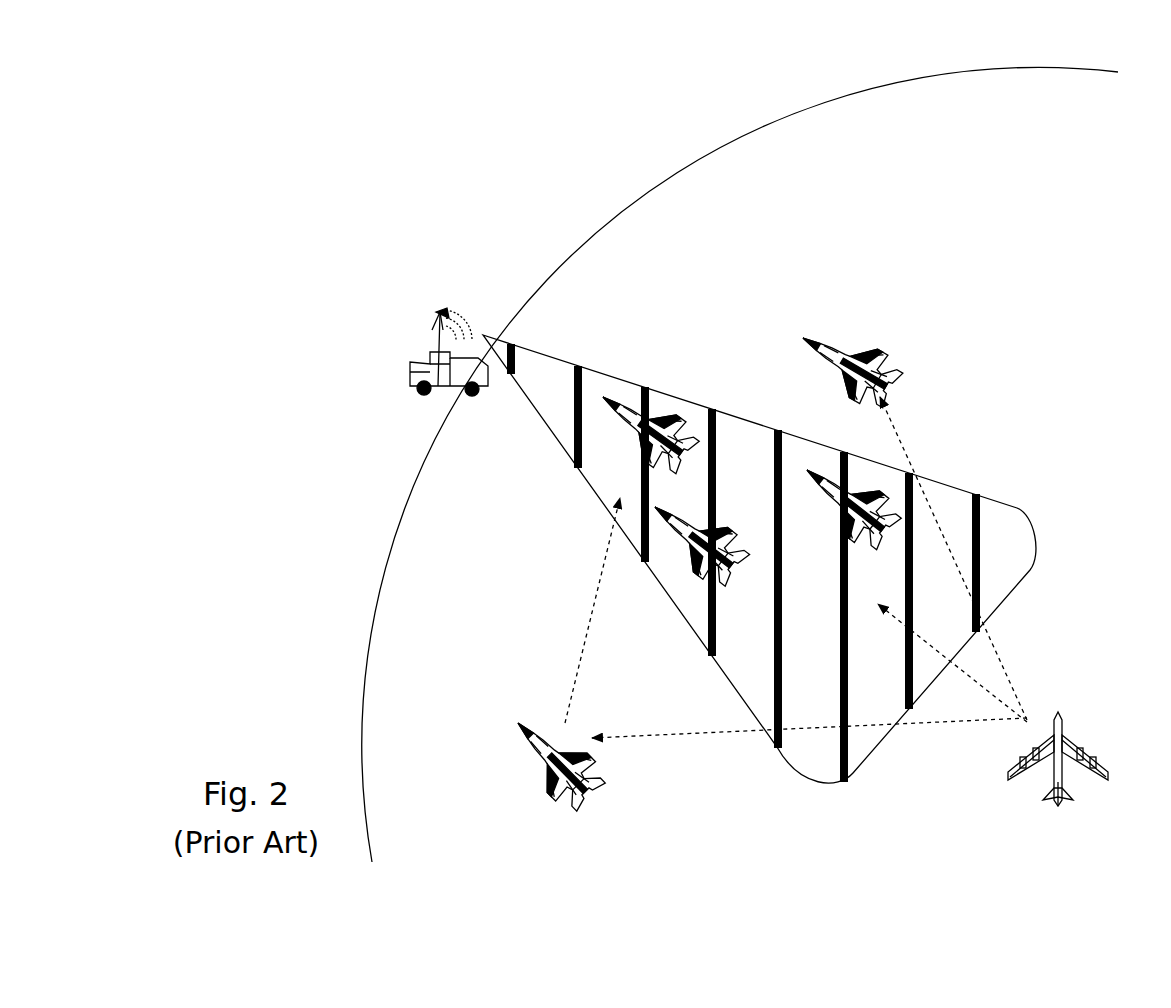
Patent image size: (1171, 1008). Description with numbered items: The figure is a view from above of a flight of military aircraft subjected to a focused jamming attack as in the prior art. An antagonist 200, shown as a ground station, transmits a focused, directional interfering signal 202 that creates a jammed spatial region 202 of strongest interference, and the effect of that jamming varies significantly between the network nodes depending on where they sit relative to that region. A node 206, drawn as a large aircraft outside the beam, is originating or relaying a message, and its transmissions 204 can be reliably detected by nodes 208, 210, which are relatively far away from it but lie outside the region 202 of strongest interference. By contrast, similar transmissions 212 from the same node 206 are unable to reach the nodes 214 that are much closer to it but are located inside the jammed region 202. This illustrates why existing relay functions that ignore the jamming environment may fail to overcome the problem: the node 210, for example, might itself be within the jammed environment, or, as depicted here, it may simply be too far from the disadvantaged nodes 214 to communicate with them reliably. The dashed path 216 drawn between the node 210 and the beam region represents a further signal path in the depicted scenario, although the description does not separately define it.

The antagonist 200 is at (413, 362).
The focused directional interfering signal / jammed spatial region 202 is at (1032, 522).
The transmissions 204 is at (905, 452).
The node 206 is at (1087, 752).
The node 208 is at (852, 340).
The node 210 is at (527, 738).
The transmissions 212 is at (936, 650).
The nodes 214 is at (733, 560).
The jamming signal path 216 is at (592, 618).